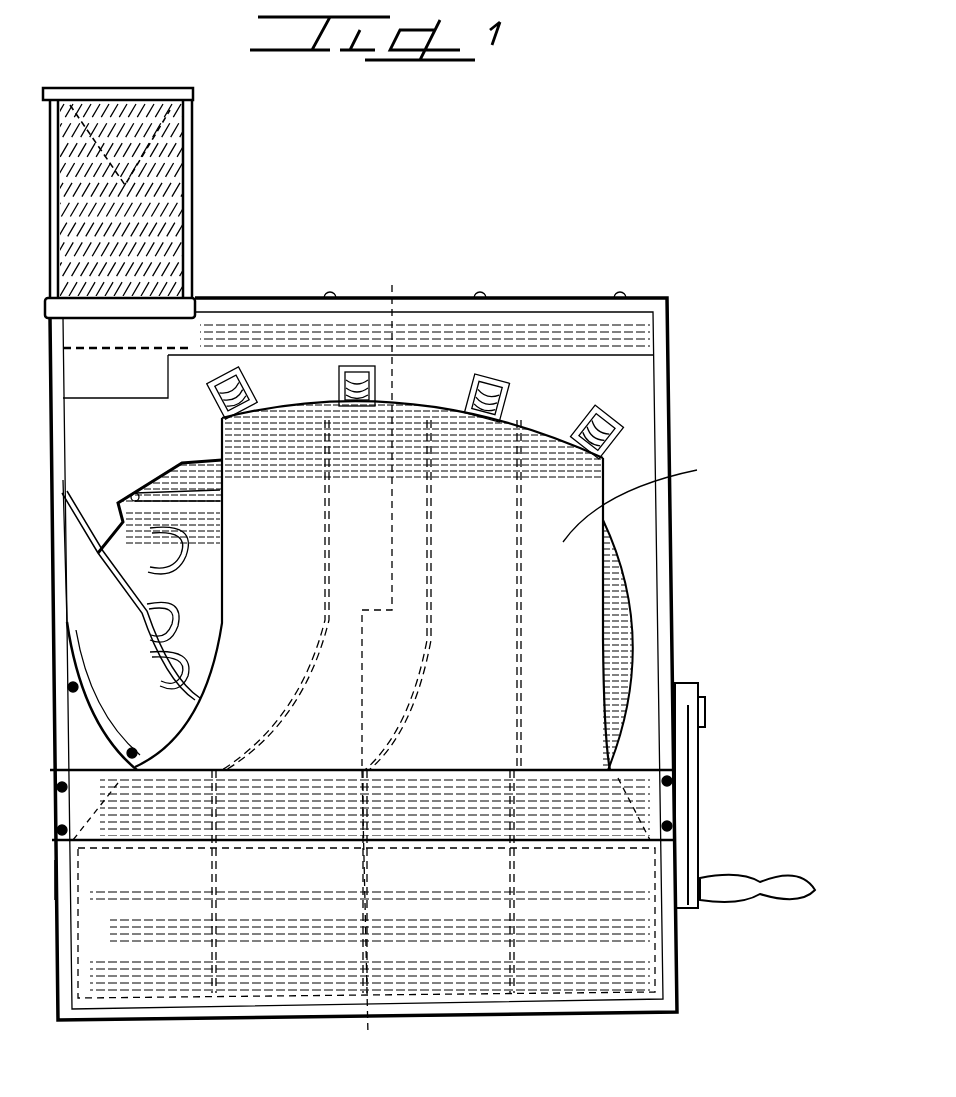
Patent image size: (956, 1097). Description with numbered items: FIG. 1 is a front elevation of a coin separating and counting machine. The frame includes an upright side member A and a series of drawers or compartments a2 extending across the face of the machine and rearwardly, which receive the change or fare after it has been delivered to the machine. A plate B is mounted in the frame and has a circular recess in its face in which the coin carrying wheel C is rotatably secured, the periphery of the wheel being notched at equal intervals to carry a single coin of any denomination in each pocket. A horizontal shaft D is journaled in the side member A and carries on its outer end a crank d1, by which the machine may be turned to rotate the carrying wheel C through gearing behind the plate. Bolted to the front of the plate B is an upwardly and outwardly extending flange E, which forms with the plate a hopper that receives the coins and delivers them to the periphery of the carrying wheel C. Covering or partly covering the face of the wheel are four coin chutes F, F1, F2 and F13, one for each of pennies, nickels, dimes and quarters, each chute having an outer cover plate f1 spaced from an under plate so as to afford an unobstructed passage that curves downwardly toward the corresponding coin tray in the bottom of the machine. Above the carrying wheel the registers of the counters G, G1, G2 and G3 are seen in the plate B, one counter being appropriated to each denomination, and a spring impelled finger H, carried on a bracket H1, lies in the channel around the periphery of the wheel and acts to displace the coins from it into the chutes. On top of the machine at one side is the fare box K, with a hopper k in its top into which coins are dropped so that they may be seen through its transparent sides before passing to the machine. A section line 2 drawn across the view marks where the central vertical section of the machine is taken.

The side member A is at (655, 553).
The plate B is at (637, 688).
The coin carrying wheel C is at (142, 602).
The horizontal shaft D is at (705, 718).
The crank d1 is at (698, 850).
The flange E is at (118, 698).
The coin chute F is at (560, 577).
The cover plate f1 is at (630, 491).
The coin chute F1 is at (465, 625).
The coin chute F2 is at (372, 585).
The coin chute F13 is at (222, 455).
The counter G is at (222, 402).
The counter G1 is at (372, 378).
The counter G2 is at (470, 398).
The counter G3 is at (594, 420).
The spring impelled finger H is at (168, 476).
The bracket H1 is at (60, 860).
The fare box K is at (152, 206).
The hopper k is at (168, 128).
The drawers or compartments a2 is at (625, 995).
The section line 2 is at (358, 1039).